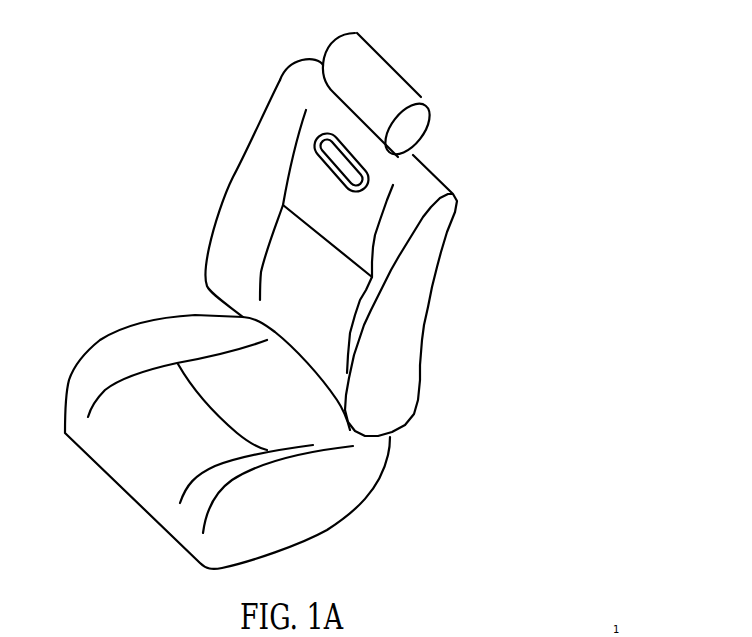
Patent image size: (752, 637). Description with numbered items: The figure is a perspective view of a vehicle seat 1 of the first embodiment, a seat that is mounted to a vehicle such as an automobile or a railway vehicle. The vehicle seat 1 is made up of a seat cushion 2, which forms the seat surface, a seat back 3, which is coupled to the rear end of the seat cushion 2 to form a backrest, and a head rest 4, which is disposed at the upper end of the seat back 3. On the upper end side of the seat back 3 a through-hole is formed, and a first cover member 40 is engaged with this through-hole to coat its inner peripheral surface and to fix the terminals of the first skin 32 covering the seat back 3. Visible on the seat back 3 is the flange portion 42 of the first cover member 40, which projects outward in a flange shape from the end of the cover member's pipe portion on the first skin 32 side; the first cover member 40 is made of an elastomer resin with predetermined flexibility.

The vehicle seat 1 is at (560, 87).
The seat cushion 2 is at (333, 507).
The seat back 3 is at (243, 78).
The first skin 32 is at (233, 190).
The head rest 4 is at (383, 70).
The first cover member 40 is at (341, 162).
The flange portion 42 is at (313, 111).